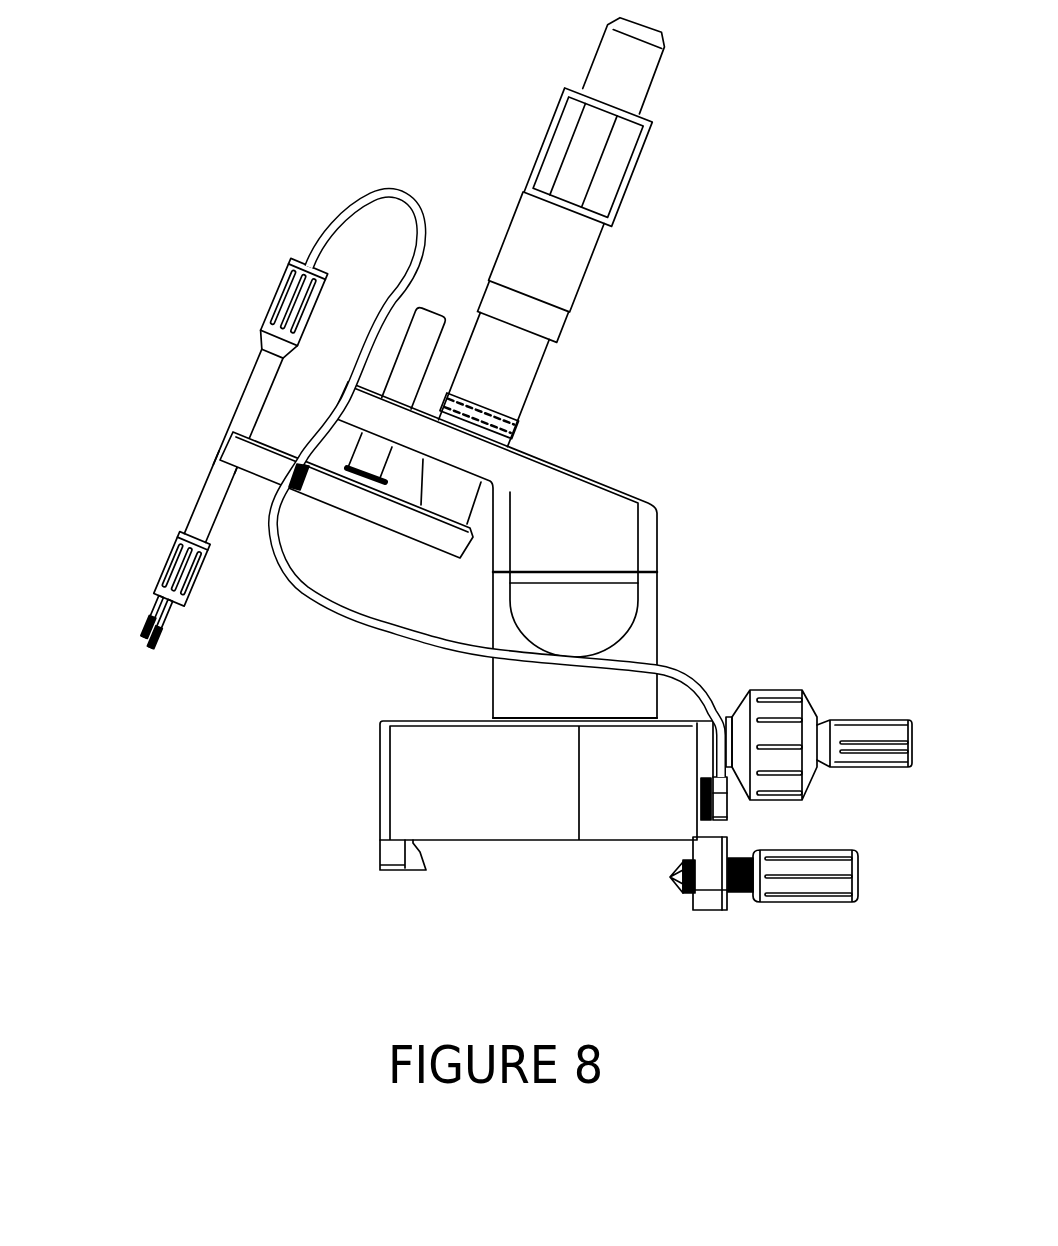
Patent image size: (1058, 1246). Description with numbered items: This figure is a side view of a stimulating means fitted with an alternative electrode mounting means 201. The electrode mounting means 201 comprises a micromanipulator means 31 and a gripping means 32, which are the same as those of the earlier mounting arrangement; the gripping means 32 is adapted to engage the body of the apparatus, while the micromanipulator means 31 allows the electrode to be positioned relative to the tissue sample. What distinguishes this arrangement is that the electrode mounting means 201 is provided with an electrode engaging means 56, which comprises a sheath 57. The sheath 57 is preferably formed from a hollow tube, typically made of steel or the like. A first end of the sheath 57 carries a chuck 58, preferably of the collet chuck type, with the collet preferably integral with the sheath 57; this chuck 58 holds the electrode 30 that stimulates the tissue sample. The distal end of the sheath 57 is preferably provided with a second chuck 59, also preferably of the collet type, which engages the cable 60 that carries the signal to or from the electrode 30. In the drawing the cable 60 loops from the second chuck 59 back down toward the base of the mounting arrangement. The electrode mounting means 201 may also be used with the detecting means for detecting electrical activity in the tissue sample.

The electrode 30 is at (173, 612).
The micromanipulator means 31 is at (537, 375).
The gripping means 32 is at (353, 911).
The electrode engaging means 56 is at (252, 402).
The sheath 57 is at (198, 495).
The chuck 58 is at (162, 547).
The second chuck 59 is at (288, 268).
The cable 60 is at (373, 192).
The electrode mounting means 201 is at (578, 467).